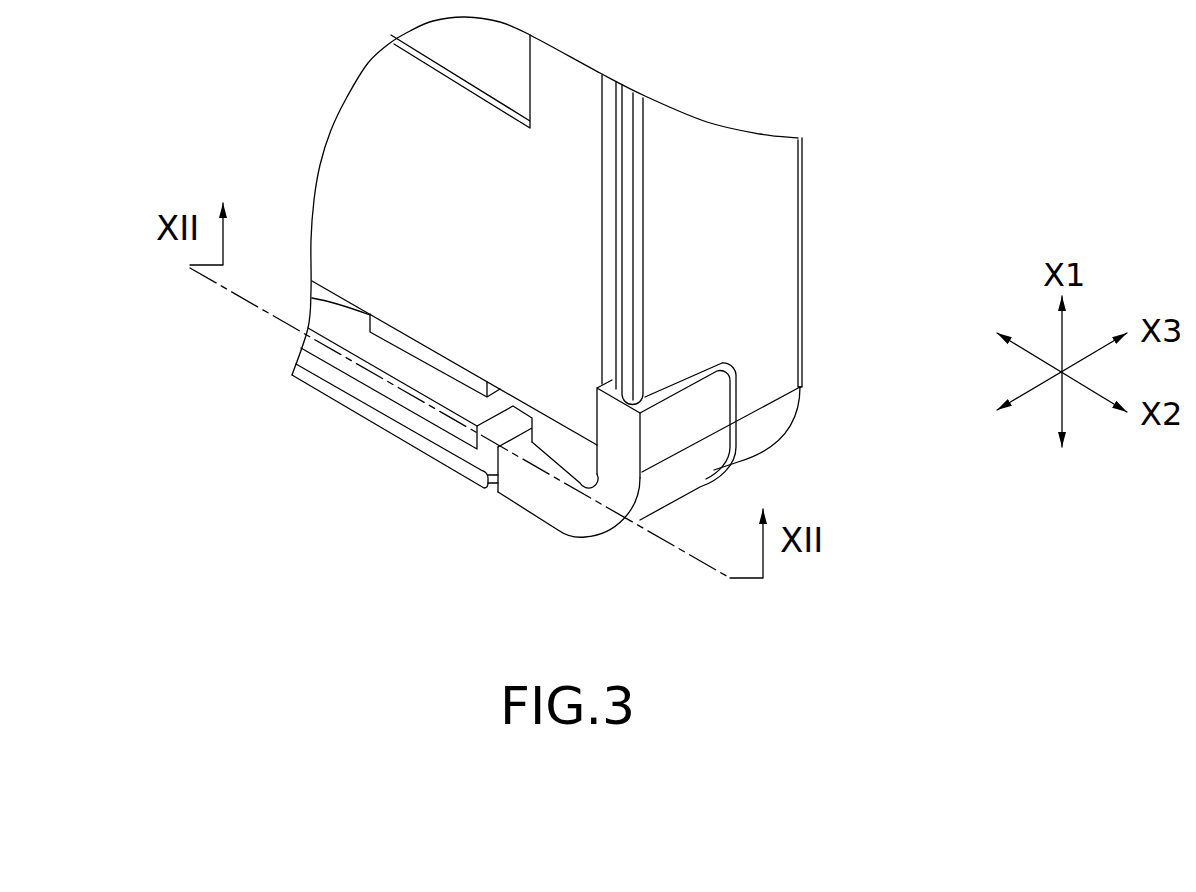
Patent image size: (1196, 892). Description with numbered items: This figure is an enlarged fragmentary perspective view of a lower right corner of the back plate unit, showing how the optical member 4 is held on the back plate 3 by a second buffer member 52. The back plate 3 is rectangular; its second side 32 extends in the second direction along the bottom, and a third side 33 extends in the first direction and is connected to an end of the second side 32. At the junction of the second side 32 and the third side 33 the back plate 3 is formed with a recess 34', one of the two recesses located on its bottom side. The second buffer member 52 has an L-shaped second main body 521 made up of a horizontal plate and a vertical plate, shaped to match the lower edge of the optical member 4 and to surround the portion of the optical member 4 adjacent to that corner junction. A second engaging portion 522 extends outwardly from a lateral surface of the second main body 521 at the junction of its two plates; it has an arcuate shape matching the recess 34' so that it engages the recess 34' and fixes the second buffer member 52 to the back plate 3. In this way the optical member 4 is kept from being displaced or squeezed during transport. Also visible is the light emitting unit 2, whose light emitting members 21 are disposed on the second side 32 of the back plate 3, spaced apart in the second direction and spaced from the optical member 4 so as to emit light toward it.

The optical member 4 is at (388, 163).
The back plate 3 is at (767, 205).
The third side 33 is at (765, 238).
The recess 34' is at (774, 417).
The second buffer member 52 is at (690, 462).
The second main body 521 is at (582, 518).
The second engaging portion 522 is at (556, 428).
The light emitting member 21 is at (312, 298).
The light emitting unit 2 is at (390, 351).
The second side 32 is at (384, 430).